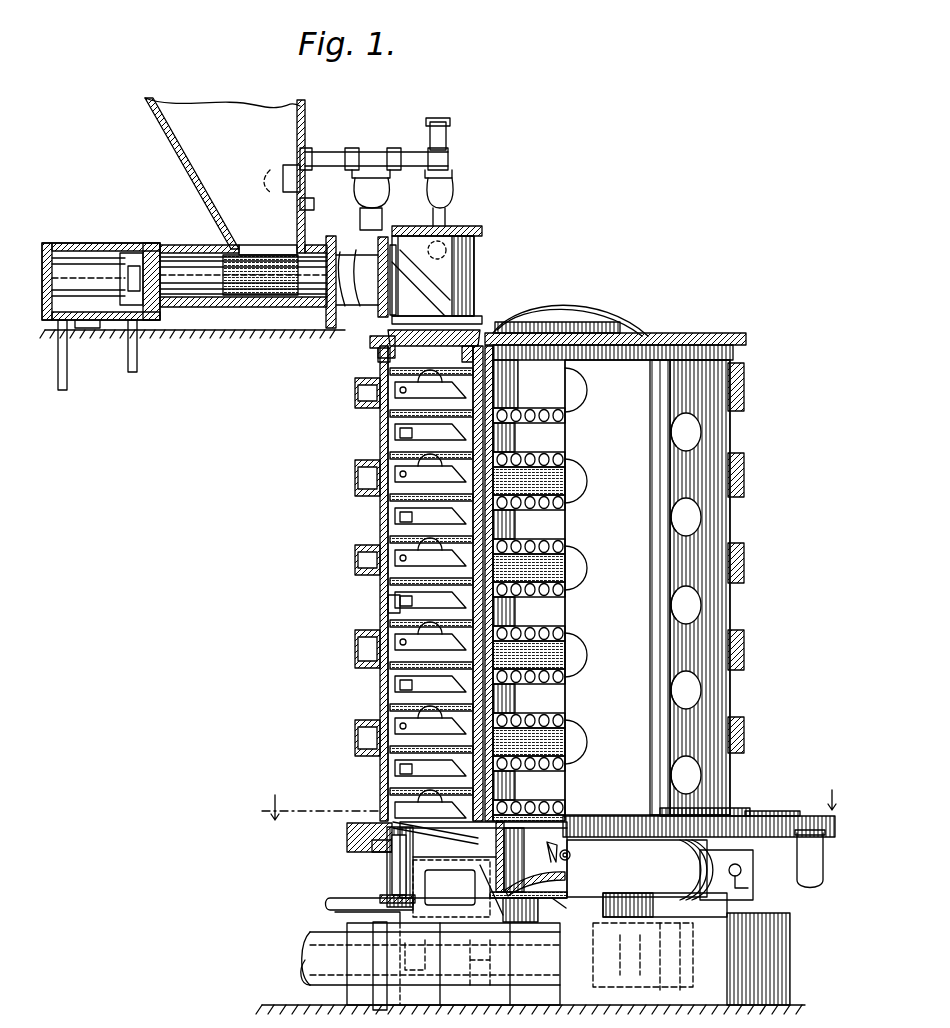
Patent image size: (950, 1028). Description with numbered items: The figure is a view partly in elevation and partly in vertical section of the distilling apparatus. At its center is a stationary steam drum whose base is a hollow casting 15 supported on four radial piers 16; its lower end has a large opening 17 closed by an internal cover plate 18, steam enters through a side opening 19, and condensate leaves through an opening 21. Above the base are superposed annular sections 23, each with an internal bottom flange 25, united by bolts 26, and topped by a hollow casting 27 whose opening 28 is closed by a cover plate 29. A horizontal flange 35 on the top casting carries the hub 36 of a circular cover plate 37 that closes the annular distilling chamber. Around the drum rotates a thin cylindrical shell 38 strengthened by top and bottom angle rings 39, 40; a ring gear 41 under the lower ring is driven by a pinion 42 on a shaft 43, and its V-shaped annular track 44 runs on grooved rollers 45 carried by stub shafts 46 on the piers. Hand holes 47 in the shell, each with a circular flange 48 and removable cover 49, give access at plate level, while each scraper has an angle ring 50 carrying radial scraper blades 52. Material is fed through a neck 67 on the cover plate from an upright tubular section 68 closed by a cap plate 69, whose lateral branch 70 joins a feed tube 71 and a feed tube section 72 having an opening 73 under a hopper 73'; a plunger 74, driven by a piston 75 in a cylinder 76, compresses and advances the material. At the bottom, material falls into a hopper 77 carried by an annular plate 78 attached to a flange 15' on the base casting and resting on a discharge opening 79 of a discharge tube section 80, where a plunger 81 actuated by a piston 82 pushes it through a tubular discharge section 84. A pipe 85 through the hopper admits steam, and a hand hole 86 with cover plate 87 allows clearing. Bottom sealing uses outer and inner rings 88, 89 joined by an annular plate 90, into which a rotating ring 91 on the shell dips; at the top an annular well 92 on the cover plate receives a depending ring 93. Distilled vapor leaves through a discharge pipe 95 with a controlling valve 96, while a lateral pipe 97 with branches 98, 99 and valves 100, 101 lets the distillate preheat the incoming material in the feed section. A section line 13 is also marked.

The section line 13 is at (543, 798).
The hollow casting 15 is at (535, 873).
The horizontal flange 15' is at (511, 868).
The radial piers 16 is at (640, 906).
The large opening 17 is at (571, 907).
The internal cap or cover plate 18 is at (549, 847).
The opening 19 is at (571, 855).
The opening 21 is at (536, 912).
The annular sections 23 is at (529, 614).
The internal bottom flange 25 is at (565, 462).
The bolts 26 is at (565, 646).
The hollow casting 27 is at (525, 583).
The large opening 28 is at (516, 322).
The cap or cover plate 29 is at (568, 306).
The horizontal flange 35 is at (474, 368).
The hub 36 is at (472, 352).
The circular cover plate 37 is at (630, 334).
The cylindrical shell 38 is at (657, 588).
The top angle ring 39 is at (370, 344).
The bottom angle ring 40 is at (398, 826).
The ring gear 41 is at (347, 832).
The pinion 42 is at (780, 816).
The shaft 43 is at (800, 878).
The V-shaped annular track 44 is at (372, 846).
The grooved rollers 45 is at (680, 866).
The horizontal stub shafts 46 is at (742, 866).
The radial openings or hand holes 47 is at (362, 562).
The short circular flange 48 is at (382, 540).
The removable cap or cover 49 is at (358, 474).
The angle ring 50 is at (388, 606).
The radial scraper blades 52 is at (392, 630).
The neck 67 is at (398, 324).
The tubular section 68 is at (460, 272).
The cap plate 69 is at (470, 228).
The short lateral branch 70 is at (380, 298).
The feed tube 71 is at (352, 248).
The feed tube section 72 is at (242, 310).
The opening 73 is at (268, 234).
The hopper 73' is at (222, 175).
The plunger 74 is at (275, 292).
The piston 75 is at (148, 245).
The cylinder 76 is at (92, 245).
The hopper 77 is at (483, 860).
The annular plate 78 is at (484, 975).
The discharge opening 79 is at (430, 928).
The discharge tube section 80 is at (453, 965).
The plunger 81 is at (392, 988).
The piston 82 is at (636, 946).
The tubular discharge section 84 is at (305, 944).
The pipe 85 is at (334, 898).
The hand hole 86 is at (442, 874).
The cover plate 87 is at (450, 887).
The outer concentric ring 88 is at (390, 858).
The inner concentric ring 89 is at (392, 870).
The horizontal annular plate 90 is at (366, 914).
The rotating ring 91 is at (380, 890).
The annular trough or well 92 is at (424, 372).
The depending ring 93 is at (378, 356).
The discharge pipe 95 is at (448, 130).
The controlling valve 96 is at (452, 184).
The laterally extending pipe 97 is at (397, 150).
The branch 98 is at (382, 212).
The branch 99 is at (312, 206).
The controlling valve 100 is at (378, 186).
The controlling valve 101 is at (302, 180).